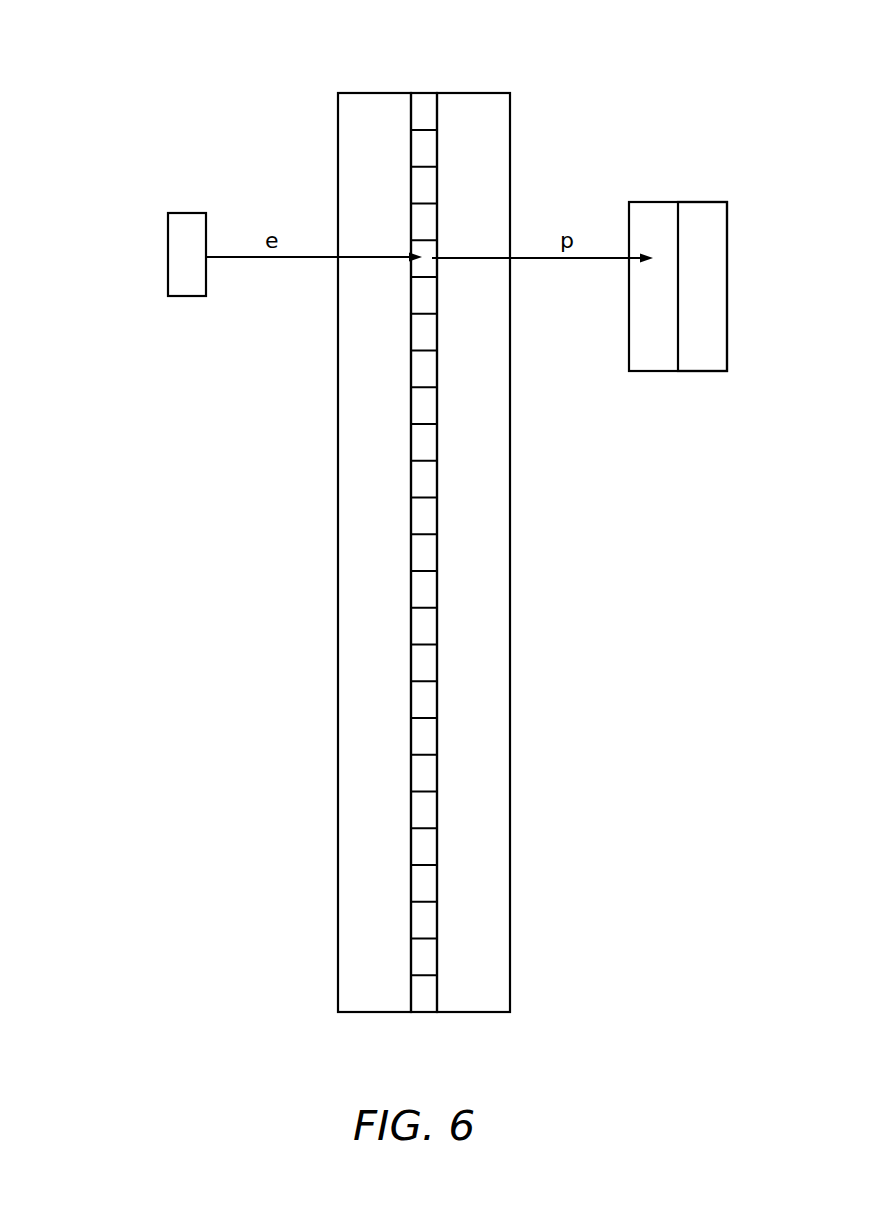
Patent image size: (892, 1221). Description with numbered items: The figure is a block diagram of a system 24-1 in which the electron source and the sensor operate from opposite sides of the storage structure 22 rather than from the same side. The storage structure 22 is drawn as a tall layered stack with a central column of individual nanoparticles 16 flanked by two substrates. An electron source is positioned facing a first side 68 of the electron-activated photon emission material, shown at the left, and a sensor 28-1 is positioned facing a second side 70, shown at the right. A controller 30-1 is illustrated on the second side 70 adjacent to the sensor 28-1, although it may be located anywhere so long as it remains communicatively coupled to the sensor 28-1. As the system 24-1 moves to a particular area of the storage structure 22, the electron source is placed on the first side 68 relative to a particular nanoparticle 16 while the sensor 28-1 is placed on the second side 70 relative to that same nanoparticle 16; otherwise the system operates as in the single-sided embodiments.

The storage structure 22 is at (356, 36).
The nanoparticle 16 is at (426, 102).
The system 24-1 is at (168, 250).
The sensor 28-1 is at (655, 202).
The controller 30-1 is at (727, 247).
The first side 68 is at (326, 664).
The second side 70 is at (522, 664).